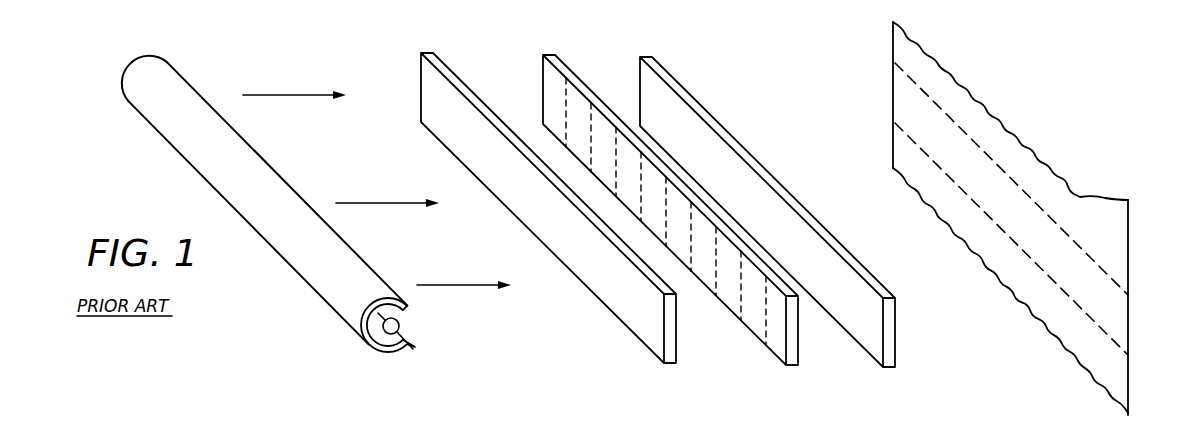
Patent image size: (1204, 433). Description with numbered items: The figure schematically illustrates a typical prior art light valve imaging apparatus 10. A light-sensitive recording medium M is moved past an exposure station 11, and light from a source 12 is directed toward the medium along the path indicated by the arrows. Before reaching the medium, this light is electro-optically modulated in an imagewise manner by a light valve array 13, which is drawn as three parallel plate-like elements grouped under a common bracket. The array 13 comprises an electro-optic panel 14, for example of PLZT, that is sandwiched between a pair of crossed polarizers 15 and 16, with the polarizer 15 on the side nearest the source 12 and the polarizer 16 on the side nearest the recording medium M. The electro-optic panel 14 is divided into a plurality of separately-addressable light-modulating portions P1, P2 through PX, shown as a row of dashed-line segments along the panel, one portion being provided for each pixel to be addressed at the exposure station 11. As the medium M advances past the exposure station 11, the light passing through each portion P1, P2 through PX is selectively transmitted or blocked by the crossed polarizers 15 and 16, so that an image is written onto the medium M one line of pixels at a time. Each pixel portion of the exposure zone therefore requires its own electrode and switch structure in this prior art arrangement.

The light valve imaging apparatus 10 is at (528, 345).
The exposure station 11 is at (1039, 218).
The light source 12 is at (335, 304).
The light valve array 13 is at (413, 48).
The electro-optic panel 14 is at (670, 220).
The polarizer 15 is at (652, 335).
The polarizer 16 is at (877, 345).
The light-sensitive recording medium M is at (995, 265).
The light-modulating portion P1 is at (554, 101).
The light-modulating portion P2 is at (576, 118).
The light-modulating portion PX is at (774, 319).